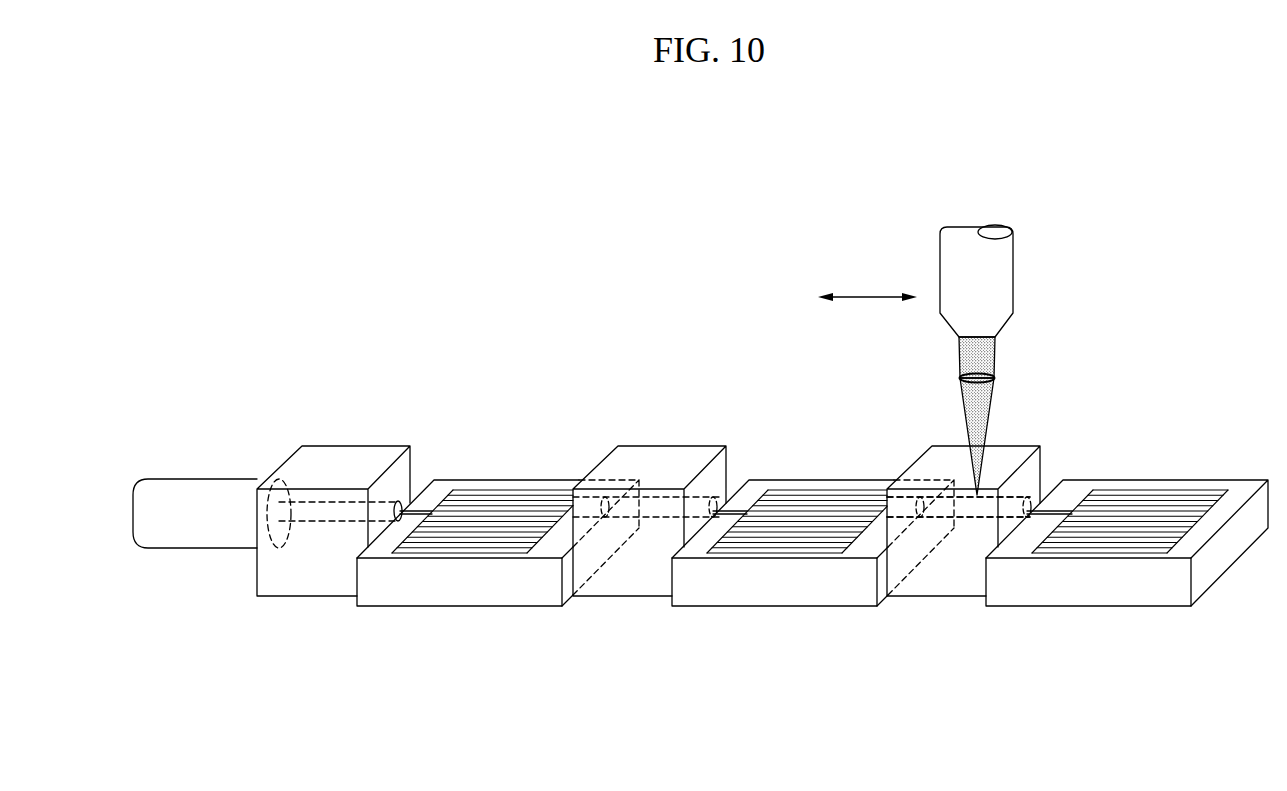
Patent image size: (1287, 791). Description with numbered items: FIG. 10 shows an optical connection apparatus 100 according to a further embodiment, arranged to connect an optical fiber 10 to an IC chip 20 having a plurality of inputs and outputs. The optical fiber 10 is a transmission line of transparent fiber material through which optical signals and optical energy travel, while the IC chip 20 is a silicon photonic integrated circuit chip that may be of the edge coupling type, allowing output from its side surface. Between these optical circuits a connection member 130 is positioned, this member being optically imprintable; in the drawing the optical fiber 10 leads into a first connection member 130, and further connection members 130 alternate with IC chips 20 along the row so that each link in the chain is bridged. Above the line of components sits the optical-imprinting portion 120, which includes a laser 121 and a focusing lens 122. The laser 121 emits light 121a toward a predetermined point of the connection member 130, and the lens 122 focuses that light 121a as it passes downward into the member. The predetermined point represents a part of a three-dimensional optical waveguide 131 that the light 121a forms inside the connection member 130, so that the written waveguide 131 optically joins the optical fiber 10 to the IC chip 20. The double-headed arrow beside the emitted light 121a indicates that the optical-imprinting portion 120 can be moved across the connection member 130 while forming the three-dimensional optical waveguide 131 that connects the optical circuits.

The optical fiber 10 is at (212, 526).
The IC chip 20 is at (484, 456).
The optical connection apparatus 100 is at (812, 222).
The optical-imprinting portion 120 is at (1037, 228).
The laser 121 is at (1002, 269).
The light 121a is at (960, 355).
The focusing lens 122 is at (1000, 379).
The connection member 130 is at (306, 467).
The 3D optical waveguide 131 is at (965, 518).